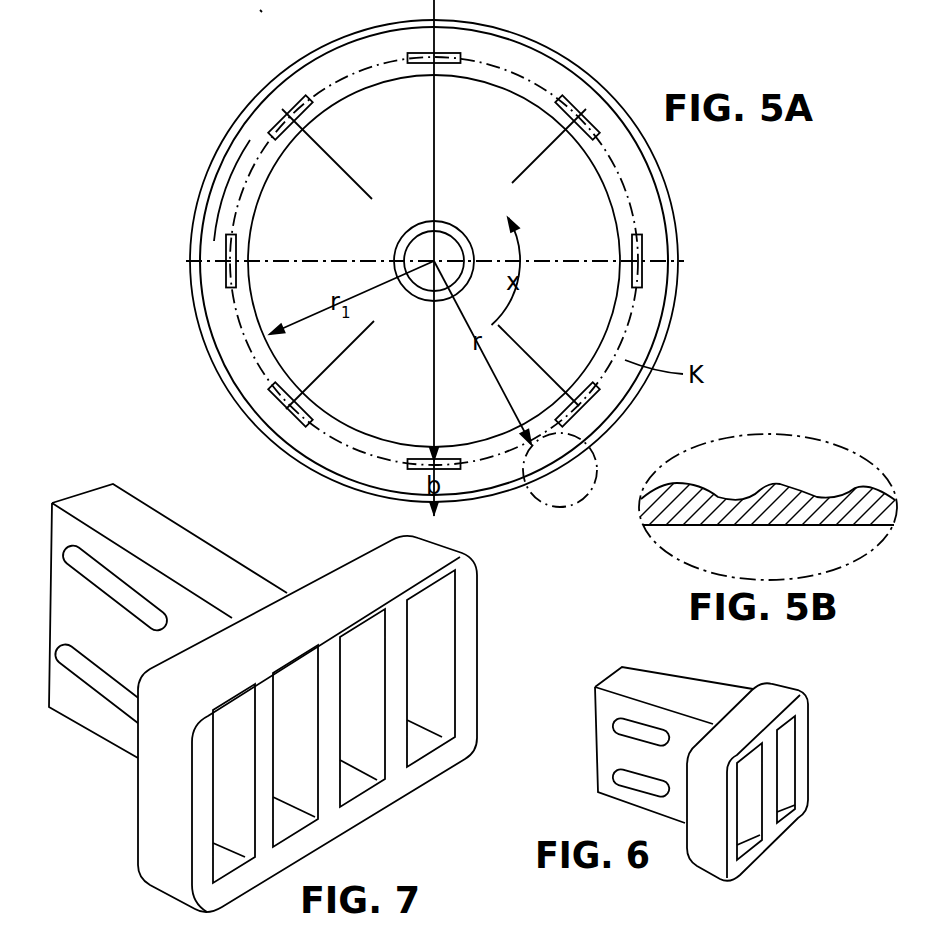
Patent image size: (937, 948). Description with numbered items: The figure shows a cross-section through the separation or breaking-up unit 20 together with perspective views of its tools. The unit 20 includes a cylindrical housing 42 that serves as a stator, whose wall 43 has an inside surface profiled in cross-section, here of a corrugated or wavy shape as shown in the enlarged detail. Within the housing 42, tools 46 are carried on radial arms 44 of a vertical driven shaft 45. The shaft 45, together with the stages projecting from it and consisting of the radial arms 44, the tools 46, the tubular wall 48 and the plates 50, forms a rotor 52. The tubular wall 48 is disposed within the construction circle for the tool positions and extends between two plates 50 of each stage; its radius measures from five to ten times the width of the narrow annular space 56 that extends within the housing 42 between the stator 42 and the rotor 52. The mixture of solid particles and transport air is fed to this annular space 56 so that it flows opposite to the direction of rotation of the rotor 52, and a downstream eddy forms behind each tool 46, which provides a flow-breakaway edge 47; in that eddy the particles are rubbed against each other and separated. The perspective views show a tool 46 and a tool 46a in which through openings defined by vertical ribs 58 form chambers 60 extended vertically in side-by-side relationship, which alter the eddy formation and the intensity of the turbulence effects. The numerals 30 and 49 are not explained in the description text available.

In FIG. 5A, the separation or breaking-up unit 20 is at (205, 94).
In FIG. 5A, the rotary member 30 is at (261, 7).
In FIG. 5A, the axis of rotation 49 is at (389, 258).
In FIG. 5A, the cylindrical housing 42 is at (579, 60).
In FIG. 5A, the wall 43 is at (672, 303).
In FIG. 5B, the wall 43 is at (797, 480).
In FIG. 5A, the tubular wall 48 is at (615, 196).
In FIG. 5A, the plates 50 is at (422, 139).
In FIG. 5A, the tools 46 is at (641, 258).
In FIG. 6, the tools 46 is at (790, 753).
In FIG. 7, the tool 46a is at (338, 724).
In FIG. 5A, the vertical driven shaft 45 is at (437, 258).
In FIG. 5A, the radial arms 44 is at (324, 152).
In FIG. 7, the radial arms 44 is at (235, 587).
In FIG. 5A, the annular space 56 is at (213, 240).
In FIG. 5A, the rotor 52 is at (246, 324).
In FIG. 7, the vertical ribs 58 is at (330, 757).
In FIG. 6, the vertical ribs 58 is at (767, 762).
In FIG. 7, the chambers 60 is at (300, 730).
In FIG. 6, the chambers 60 is at (750, 810).
In FIG. 6, the flow-breakaway edge 47 is at (707, 877).